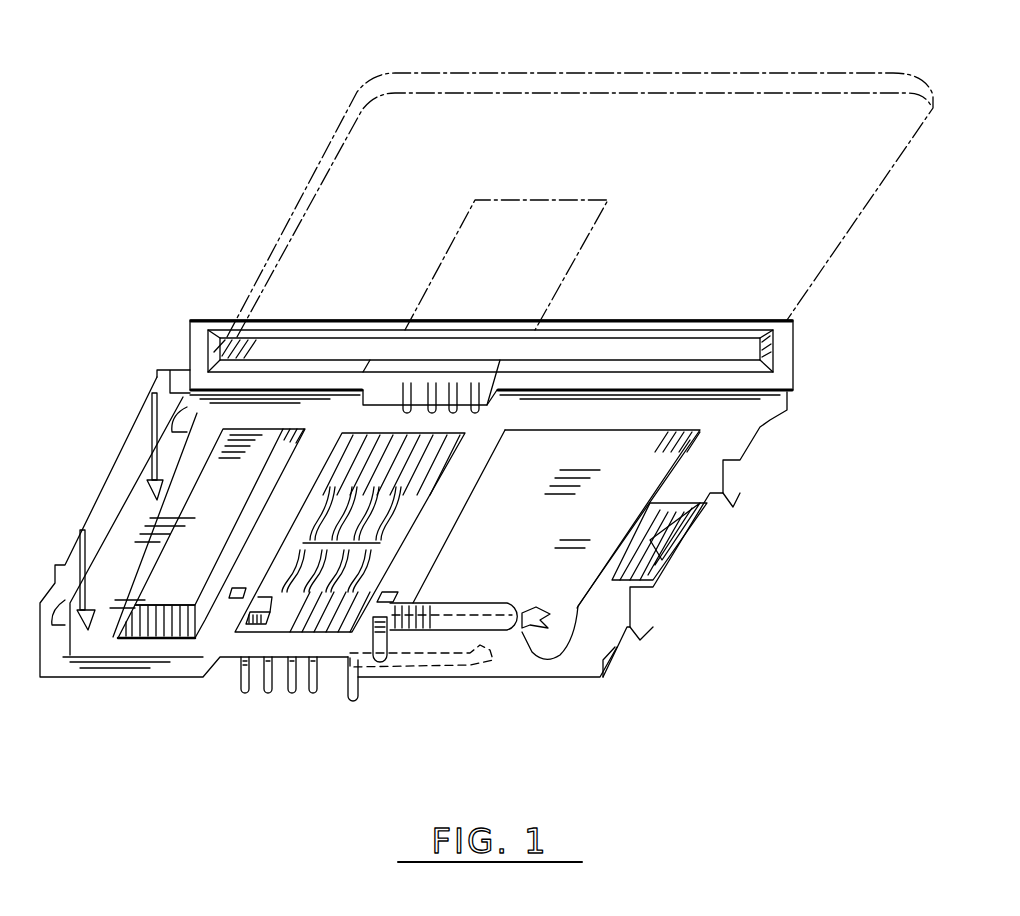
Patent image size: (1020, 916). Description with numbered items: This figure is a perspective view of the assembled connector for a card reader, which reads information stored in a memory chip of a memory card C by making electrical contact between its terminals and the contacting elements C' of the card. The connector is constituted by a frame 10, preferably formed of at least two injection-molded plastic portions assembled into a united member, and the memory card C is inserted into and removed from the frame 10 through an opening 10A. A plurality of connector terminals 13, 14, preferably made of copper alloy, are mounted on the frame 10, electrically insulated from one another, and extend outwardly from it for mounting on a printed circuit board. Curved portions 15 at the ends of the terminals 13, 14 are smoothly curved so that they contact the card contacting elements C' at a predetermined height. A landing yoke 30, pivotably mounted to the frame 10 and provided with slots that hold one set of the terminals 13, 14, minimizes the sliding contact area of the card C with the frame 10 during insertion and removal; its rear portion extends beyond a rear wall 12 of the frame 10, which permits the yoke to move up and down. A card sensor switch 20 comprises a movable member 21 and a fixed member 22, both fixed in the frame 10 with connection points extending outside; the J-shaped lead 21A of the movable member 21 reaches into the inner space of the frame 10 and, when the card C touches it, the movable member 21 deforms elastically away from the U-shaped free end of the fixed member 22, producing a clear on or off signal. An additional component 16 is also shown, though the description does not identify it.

The memory card C is at (580, 186).
The contacting elements C' is at (524, 265).
The frame 10 is at (221, 318).
The opening 10A is at (745, 353).
The connector terminals 13 is at (475, 382).
The latch arms 16 is at (148, 408).
The rear wall 12 is at (155, 623).
The curved portions 15 is at (340, 563).
The landing yoke 30 is at (267, 598).
The connector terminals 14 is at (313, 692).
The card sensor switch 20 is at (466, 669).
The movable member 21 is at (527, 626).
The lead 21A is at (542, 613).
The fixed member 22 is at (421, 683).